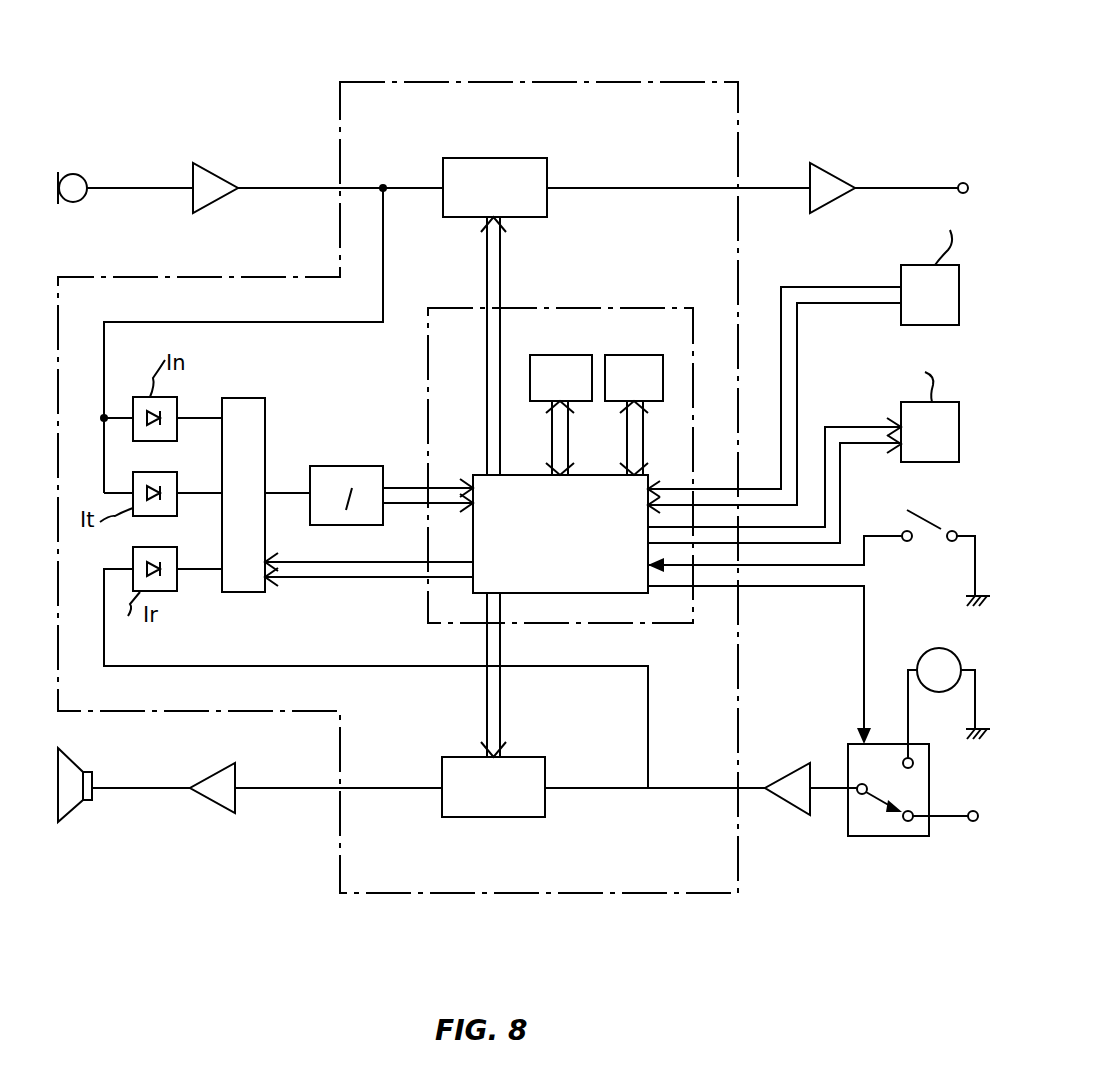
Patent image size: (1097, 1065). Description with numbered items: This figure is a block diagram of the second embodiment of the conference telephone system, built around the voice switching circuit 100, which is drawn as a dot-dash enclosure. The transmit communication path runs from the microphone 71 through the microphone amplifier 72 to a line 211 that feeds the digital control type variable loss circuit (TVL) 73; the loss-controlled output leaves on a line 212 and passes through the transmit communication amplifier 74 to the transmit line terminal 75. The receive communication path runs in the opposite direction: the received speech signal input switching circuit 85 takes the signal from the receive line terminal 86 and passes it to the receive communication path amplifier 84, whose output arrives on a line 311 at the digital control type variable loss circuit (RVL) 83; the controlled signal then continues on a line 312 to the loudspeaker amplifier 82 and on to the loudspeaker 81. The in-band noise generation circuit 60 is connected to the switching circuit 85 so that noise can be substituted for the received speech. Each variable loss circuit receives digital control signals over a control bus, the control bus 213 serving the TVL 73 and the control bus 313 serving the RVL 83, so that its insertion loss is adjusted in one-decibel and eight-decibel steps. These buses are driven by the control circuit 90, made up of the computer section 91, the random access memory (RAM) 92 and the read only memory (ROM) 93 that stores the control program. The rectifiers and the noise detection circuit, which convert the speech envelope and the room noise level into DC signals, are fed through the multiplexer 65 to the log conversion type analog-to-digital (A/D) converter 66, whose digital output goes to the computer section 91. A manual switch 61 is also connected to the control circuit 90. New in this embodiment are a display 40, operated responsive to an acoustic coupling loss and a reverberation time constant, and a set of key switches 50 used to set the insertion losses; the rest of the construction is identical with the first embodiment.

The voice switching circuit 100 is at (678, 81).
The microphone 71 is at (88, 172).
The microphone amplifier 72 is at (226, 172).
The line 211 is at (401, 172).
The digital control type variable loss circuit (TVL) 73 is at (488, 157).
The line 212 is at (628, 187).
The transmit communication amplifier 74 is at (835, 172).
The transmit line terminal 75 is at (963, 182).
The control bus 213 is at (500, 275).
The key switches 50 is at (956, 265).
The display 40 is at (945, 402).
The control circuit 90 is at (635, 308).
The computer section 91 is at (473, 476).
The random access memory (RAM) 92 is at (634, 354).
The read only memory (ROM) 93 is at (560, 354).
The multiplexer 65 is at (252, 398).
The log conversion type analog-to-digital (A/D) converter 66 is at (343, 466).
The manual switch 61 is at (940, 522).
The in-band noise generation circuit 60 is at (958, 654).
The control bus 313 is at (500, 652).
The line 312 is at (358, 790).
The digital control type variable loss circuit (RVL) 83 is at (490, 817).
The line 311 is at (598, 790).
The loudspeaker 81 is at (70, 816).
The loudspeaker amplifier 82 is at (225, 810).
The receive communication path amplifier 84 is at (778, 800).
The received speech signal input switching circuit 85 is at (862, 836).
The receive line terminal 86 is at (974, 822).